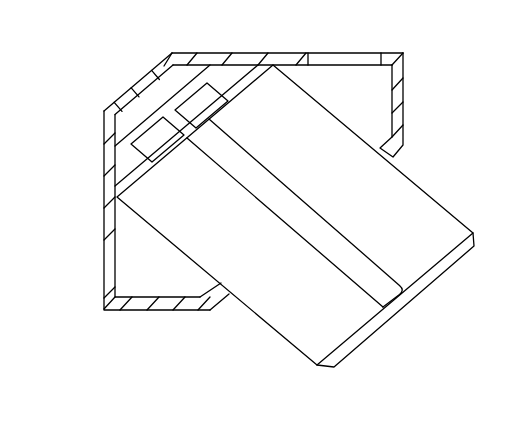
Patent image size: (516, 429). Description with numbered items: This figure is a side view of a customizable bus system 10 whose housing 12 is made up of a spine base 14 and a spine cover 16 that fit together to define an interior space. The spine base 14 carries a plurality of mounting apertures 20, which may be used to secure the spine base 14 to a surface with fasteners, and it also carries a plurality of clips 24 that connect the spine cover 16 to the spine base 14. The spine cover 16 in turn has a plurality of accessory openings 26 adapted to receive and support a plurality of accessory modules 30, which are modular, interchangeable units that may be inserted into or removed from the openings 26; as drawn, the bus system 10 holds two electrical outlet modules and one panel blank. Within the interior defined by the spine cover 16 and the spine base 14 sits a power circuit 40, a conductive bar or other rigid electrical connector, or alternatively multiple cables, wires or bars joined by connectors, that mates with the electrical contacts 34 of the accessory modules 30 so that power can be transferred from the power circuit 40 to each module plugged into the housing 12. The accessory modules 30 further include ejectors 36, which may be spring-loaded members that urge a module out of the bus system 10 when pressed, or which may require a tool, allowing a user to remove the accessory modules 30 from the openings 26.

The customizable bus system 10 is at (88, 66).
The housing 12 is at (409, 89).
The spine base 14 is at (217, 53).
The spine cover 16 is at (405, 117).
The mounting apertures 20 is at (356, 60).
The clips 24 is at (265, 53).
The accessory openings 26 is at (227, 296).
The accessory modules 30 is at (432, 198).
The electrical contacts 34 is at (209, 118).
The ejectors 36 is at (397, 296).
The power circuit 40 is at (190, 106).